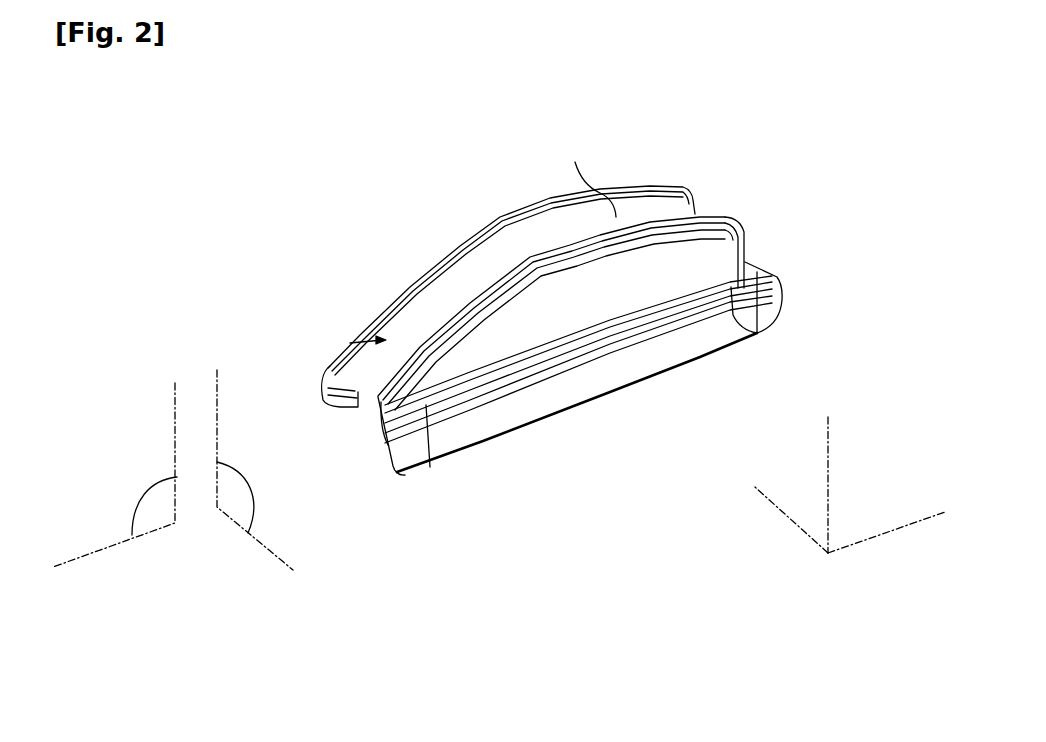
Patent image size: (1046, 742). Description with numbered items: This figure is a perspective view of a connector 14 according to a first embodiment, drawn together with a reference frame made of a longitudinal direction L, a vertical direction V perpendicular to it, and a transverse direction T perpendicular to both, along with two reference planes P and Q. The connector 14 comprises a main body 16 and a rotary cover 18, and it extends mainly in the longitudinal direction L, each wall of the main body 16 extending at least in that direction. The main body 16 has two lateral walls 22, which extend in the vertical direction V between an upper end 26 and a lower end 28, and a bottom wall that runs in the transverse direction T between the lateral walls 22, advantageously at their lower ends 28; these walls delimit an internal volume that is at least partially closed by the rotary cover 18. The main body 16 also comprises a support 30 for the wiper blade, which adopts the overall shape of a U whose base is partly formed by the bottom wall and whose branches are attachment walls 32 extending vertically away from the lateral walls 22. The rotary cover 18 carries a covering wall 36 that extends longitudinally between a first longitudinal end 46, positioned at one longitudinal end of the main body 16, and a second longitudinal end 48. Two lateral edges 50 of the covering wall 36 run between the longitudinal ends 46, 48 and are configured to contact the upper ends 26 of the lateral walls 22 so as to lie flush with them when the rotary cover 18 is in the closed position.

The connector 14 is at (437, 170).
The main body 16 is at (686, 354).
The rotary cover 18 is at (360, 335).
The lateral walls 22 is at (603, 260).
The upper end 26 is at (718, 218).
The lower end 28 is at (760, 330).
The support 30 is at (376, 403).
The attachment wall 32 is at (323, 390).
The covering wall 36 is at (423, 293).
The first longitudinal end 46 is at (350, 343).
The second longitudinal end 48 is at (563, 247).
The lateral edges 50 is at (450, 323).
The plane P is at (140, 487).
The plane Q is at (257, 477).
The vertical direction V is at (827, 457).
The transverse direction T is at (778, 510).
The longitudinal direction L is at (882, 533).